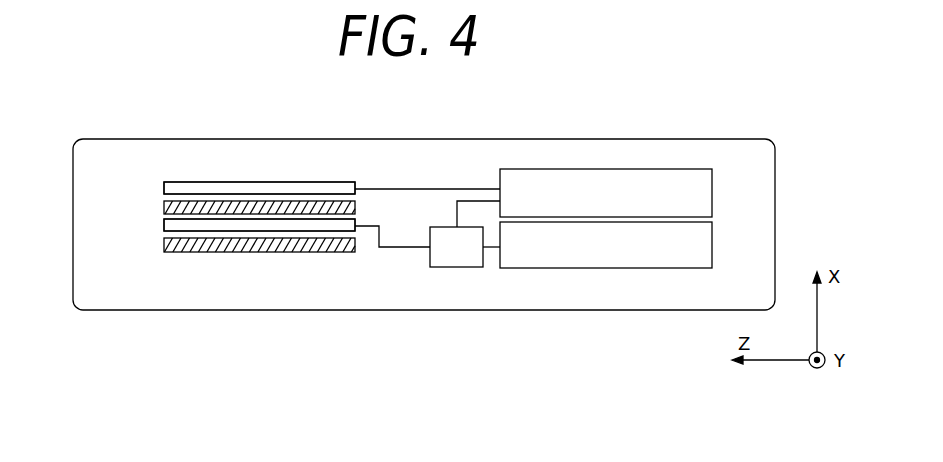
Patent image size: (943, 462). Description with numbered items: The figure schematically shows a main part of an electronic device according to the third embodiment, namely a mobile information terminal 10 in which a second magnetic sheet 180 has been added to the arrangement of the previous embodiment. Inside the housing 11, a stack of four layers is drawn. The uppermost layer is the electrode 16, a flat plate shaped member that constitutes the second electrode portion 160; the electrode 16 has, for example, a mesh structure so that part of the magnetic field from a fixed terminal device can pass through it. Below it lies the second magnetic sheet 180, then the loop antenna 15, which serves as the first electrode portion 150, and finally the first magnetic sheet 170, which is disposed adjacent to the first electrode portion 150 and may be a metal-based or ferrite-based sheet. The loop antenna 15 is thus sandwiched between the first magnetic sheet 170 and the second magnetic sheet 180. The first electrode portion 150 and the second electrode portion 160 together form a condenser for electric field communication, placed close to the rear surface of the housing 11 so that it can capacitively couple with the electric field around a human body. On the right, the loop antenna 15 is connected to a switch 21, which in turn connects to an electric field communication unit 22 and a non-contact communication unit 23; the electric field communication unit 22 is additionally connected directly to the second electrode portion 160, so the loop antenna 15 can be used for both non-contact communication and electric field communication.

The mobile information terminal 10 is at (147, 123).
The housing 11 is at (547, 139).
The loop antenna 15 is at (353, 228).
The electrode 16 is at (308, 188).
The switch 21 is at (447, 226).
The electric field communication unit 22 is at (713, 193).
The non-contact communication unit 23 is at (713, 243).
The first electrode portion 150 is at (164, 224).
The second electrode portion 160 is at (218, 182).
The first magnetic sheet 170 is at (164, 243).
The second magnetic sheet 180 is at (164, 207).